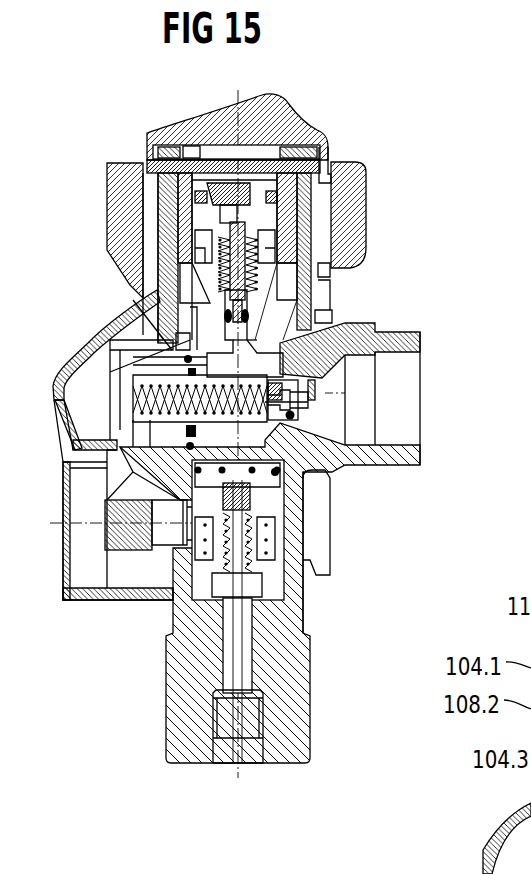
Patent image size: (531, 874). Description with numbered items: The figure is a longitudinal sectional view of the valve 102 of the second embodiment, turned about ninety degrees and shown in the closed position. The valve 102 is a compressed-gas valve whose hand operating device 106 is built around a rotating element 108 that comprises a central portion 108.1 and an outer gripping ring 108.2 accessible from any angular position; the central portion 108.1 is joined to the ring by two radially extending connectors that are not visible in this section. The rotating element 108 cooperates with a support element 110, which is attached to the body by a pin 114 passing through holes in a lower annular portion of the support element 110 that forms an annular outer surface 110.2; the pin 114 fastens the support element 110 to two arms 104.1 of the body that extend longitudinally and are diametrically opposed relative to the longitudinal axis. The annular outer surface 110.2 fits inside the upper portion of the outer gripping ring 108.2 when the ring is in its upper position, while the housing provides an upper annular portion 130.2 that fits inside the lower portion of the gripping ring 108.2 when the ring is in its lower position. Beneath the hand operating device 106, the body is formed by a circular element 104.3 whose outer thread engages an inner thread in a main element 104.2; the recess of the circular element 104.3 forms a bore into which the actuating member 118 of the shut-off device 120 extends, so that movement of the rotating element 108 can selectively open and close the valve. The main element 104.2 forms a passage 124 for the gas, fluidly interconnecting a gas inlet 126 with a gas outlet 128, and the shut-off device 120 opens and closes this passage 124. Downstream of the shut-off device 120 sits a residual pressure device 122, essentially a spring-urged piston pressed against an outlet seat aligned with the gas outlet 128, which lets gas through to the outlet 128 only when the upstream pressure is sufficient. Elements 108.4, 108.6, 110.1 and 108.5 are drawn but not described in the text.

The valve 102 is at (108, 99).
The support element 110 is at (192, 113).
The actuating stem 108.4 is at (218, 202).
The pin 114 is at (160, 163).
The arms 104.1 is at (165, 180).
The central portion 108.1 is at (187, 217).
The outer gripping ring 108.2 is at (125, 227).
The insert guide 108.6 is at (185, 256).
The circular element 104.3 is at (190, 308).
The main element 104.2 is at (165, 344).
The annular outer surface 110.2 is at (322, 163).
The hand operating device 106 is at (405, 169).
The cap insert 110.1 is at (243, 209).
The rotating element 108 is at (386, 229).
The springs 108.5 is at (324, 281).
The upper annular portion 130.2 is at (258, 264).
The actuating member 118 is at (259, 327).
The residual pressure device 122 is at (334, 391).
The gas outlet 128 is at (400, 428).
The passage 124 is at (276, 437).
The shut-off device 120 is at (291, 500).
The gas inlet 126 is at (247, 748).